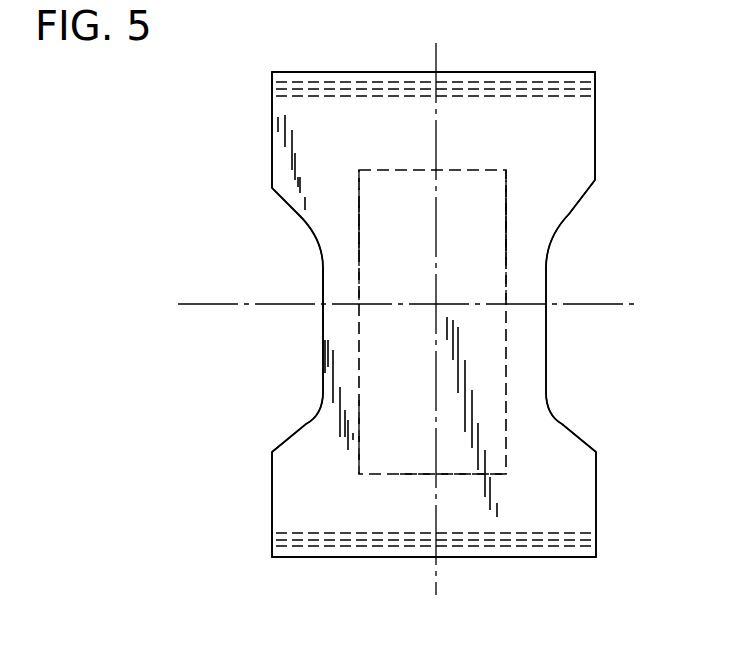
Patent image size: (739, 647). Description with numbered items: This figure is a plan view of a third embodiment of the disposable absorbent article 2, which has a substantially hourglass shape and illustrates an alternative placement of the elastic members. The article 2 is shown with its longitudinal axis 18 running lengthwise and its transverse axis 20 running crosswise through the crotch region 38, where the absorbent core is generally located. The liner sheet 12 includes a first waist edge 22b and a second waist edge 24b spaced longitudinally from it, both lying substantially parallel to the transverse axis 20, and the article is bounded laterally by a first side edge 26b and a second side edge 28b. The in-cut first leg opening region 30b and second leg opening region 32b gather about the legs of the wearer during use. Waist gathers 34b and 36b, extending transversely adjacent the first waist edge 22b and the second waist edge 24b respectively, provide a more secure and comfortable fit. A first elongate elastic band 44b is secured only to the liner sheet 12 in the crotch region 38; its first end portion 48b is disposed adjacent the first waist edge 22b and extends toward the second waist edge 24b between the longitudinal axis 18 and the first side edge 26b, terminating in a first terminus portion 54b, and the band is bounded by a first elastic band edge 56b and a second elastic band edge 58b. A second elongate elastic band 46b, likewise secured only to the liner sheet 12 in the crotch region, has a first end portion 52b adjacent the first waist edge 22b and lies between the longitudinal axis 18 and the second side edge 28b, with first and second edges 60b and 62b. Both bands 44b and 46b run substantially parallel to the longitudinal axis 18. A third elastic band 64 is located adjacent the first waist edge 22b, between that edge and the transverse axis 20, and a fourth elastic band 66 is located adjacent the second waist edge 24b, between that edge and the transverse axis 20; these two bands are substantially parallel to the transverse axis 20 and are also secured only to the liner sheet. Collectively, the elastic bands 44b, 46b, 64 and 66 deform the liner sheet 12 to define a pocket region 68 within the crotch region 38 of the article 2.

The absorbent article 2 is at (240, 165).
The liner sheet 12 is at (358, 520).
The longitudinal axis 18 is at (433, 52).
The transverse axis 20 is at (276, 308).
The first waist edge 22b is at (555, 72).
The second waist edge 24b is at (508, 557).
The first side edge 26b is at (270, 112).
The second side edge 28b is at (594, 140).
The first leg opening region 30b is at (318, 418).
The second leg opening region 32b is at (548, 283).
The waist gather 34b is at (470, 80).
The waist gather 36b is at (575, 545).
The crotch region 38 is at (517, 465).
The first elongate elastic band 44b is at (360, 208).
The second elongate elastic band 46b is at (507, 238).
The first end portion 48b is at (357, 170).
The first end portion 52b is at (508, 170).
The first terminus portion 54b is at (358, 482).
The first elastic band edge 56b is at (360, 280).
The second elastic band edge 58b is at (359, 232).
The first edge 60b is at (506, 197).
The second edge 62b is at (503, 213).
The third elastic band 64 is at (410, 170).
The fourth elastic band 66 is at (422, 478).
The pocket region 68 is at (482, 400).